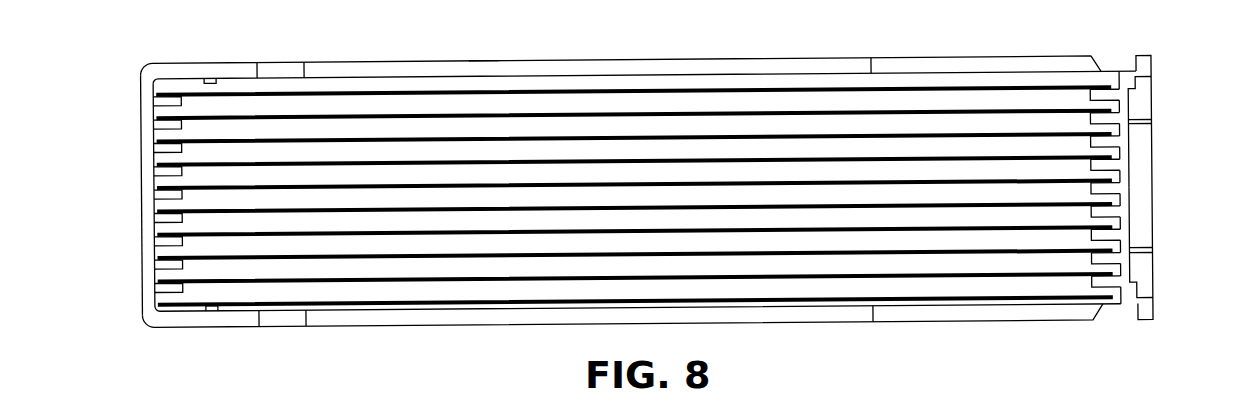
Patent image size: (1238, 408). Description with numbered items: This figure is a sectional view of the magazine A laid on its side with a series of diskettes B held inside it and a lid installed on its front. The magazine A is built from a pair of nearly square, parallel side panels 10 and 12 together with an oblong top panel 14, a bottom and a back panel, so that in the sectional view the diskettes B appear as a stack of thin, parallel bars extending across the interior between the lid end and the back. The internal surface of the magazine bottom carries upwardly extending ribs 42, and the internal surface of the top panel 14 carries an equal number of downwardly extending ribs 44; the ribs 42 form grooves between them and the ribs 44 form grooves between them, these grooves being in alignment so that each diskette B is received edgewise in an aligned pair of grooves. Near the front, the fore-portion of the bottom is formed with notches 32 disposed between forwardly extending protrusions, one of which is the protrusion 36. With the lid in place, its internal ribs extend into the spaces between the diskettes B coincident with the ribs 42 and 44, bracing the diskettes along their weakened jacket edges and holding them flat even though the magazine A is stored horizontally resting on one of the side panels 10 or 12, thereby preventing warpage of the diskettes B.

The side panel 10 is at (646, 207).
The side panel 12 is at (652, 60).
The top panel 14 is at (110, 195).
The notches 32 is at (1168, 131).
The protrusion 36 is at (1169, 242).
The ribs 42 is at (1148, 187).
The ribs 44 is at (130, 195).
The magazine A is at (483, 61).
The diskette B is at (785, 89).